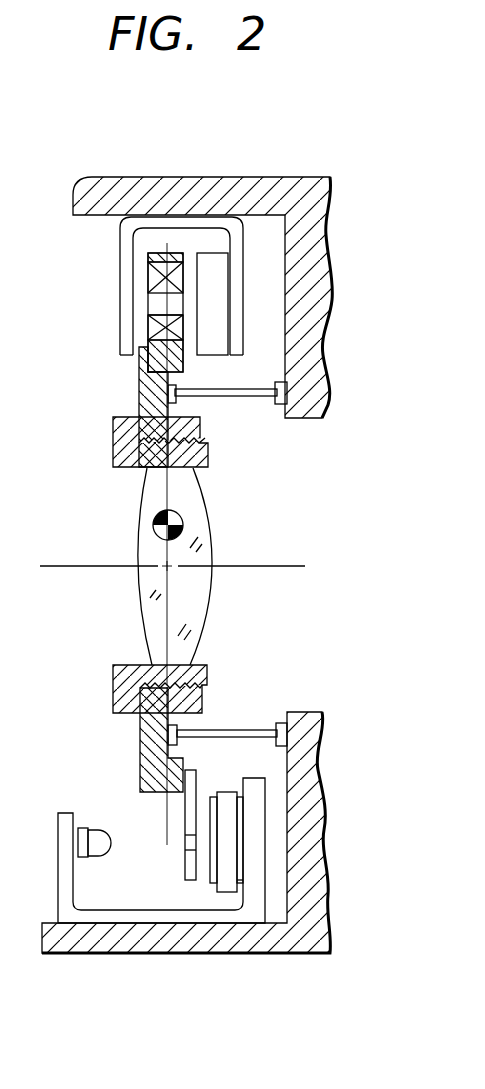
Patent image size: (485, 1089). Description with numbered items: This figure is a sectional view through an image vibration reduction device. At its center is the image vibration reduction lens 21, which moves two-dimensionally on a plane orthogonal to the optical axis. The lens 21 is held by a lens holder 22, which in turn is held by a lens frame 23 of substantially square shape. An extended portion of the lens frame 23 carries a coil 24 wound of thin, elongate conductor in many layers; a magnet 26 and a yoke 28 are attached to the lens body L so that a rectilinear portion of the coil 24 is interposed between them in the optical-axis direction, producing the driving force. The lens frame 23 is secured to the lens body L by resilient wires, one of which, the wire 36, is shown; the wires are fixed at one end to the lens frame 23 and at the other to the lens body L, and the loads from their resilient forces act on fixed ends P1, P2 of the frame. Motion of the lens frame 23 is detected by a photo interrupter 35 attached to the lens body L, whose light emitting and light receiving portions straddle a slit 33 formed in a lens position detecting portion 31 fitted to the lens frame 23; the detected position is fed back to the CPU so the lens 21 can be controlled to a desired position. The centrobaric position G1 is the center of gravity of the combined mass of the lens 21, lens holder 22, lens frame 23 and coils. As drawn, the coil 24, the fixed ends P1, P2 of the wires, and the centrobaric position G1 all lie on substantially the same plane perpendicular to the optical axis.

The image vibration reduction lens 21 is at (148, 630).
The lens holder 22 is at (125, 445).
The lens frame 23 is at (150, 717).
The coil 24 is at (152, 278).
The magnet 26 is at (214, 263).
The yoke 28 is at (137, 222).
The lens position detecting portion 31 is at (195, 780).
The slit 33 is at (187, 840).
The photo interrupter 35 is at (102, 857).
The resilient wire 36 is at (255, 395).
The centrobaric position G1 is at (183, 520).
The fixed end P1 is at (162, 395).
The fixed end P2 is at (168, 740).
The lens body L is at (308, 940).